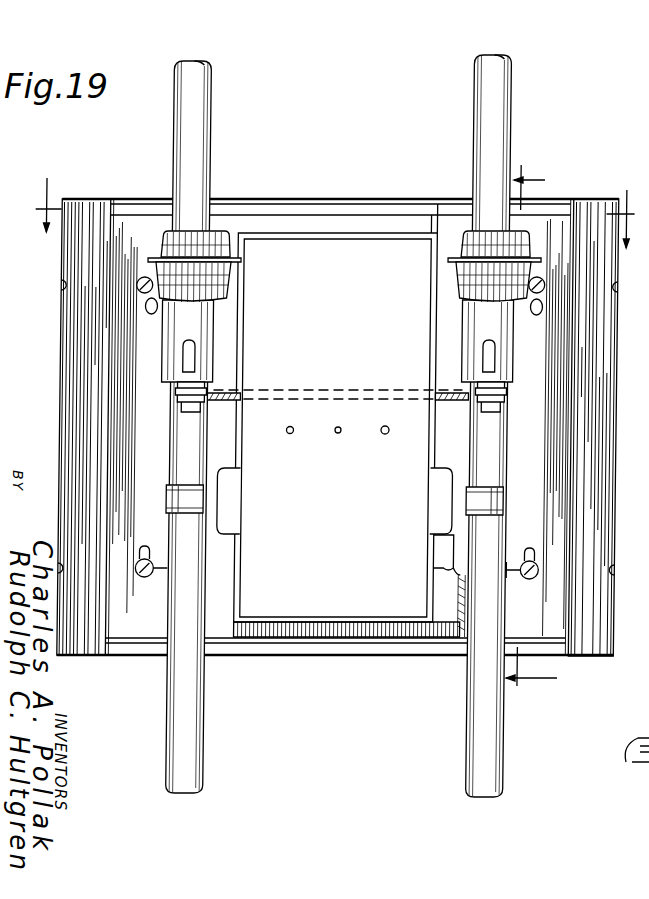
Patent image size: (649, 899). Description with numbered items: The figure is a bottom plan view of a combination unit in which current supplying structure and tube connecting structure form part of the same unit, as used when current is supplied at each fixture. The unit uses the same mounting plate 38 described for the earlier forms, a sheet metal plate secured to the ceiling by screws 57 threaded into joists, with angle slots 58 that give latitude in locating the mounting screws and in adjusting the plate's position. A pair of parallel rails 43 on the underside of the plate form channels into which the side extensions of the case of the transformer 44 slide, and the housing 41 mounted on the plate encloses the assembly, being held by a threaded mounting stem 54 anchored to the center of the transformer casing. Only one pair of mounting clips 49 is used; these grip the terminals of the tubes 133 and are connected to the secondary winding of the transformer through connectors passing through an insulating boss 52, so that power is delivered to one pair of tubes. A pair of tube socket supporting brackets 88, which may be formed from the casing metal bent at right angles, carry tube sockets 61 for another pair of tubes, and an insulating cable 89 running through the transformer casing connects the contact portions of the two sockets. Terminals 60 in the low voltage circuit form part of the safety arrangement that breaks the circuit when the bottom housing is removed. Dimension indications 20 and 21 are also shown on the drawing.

The tubes 133 is at (199, 88).
The parallel rails 43 is at (228, 220).
The dimension line 21 is at (535, 430).
The housing 41 is at (648, 140).
The dimension line 20 is at (327, 213).
The tube socket supporting brackets 88 is at (230, 257).
The screws 57 is at (135, 285).
The angle slots 58 is at (144, 310).
The tube sockets 61 is at (217, 303).
The mounting plate 38 is at (122, 387).
The insulating cable 89 is at (448, 392).
The terminals 60 is at (288, 434).
The transformer 44 is at (374, 442).
The threaded mounting stem 54 is at (387, 434).
The mounting clips 49 is at (214, 496).
The insulating boss 52 is at (236, 512).